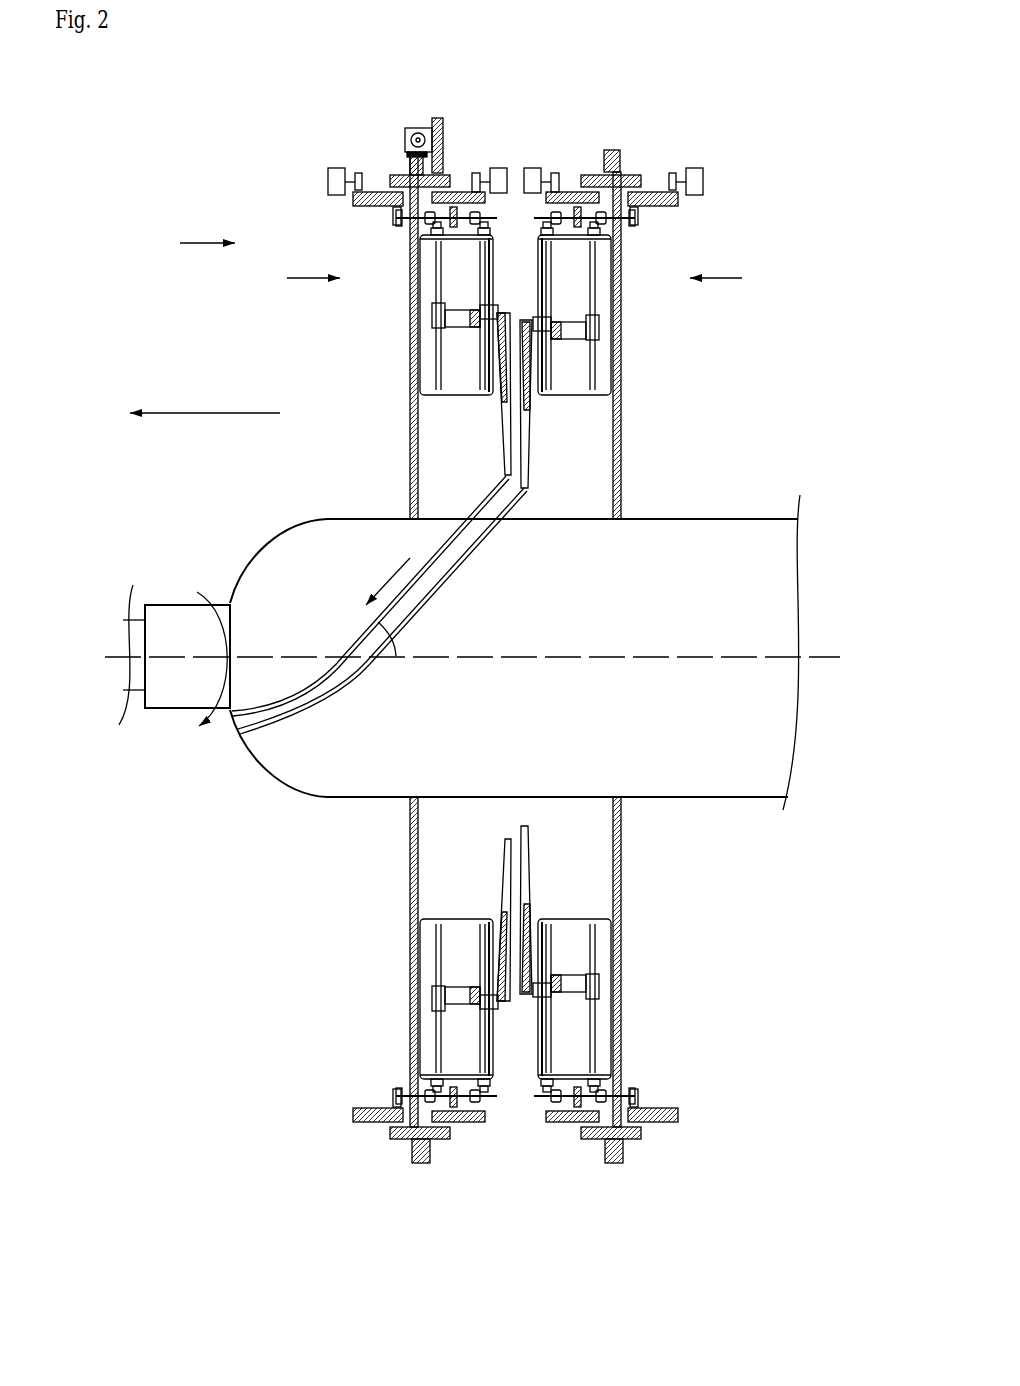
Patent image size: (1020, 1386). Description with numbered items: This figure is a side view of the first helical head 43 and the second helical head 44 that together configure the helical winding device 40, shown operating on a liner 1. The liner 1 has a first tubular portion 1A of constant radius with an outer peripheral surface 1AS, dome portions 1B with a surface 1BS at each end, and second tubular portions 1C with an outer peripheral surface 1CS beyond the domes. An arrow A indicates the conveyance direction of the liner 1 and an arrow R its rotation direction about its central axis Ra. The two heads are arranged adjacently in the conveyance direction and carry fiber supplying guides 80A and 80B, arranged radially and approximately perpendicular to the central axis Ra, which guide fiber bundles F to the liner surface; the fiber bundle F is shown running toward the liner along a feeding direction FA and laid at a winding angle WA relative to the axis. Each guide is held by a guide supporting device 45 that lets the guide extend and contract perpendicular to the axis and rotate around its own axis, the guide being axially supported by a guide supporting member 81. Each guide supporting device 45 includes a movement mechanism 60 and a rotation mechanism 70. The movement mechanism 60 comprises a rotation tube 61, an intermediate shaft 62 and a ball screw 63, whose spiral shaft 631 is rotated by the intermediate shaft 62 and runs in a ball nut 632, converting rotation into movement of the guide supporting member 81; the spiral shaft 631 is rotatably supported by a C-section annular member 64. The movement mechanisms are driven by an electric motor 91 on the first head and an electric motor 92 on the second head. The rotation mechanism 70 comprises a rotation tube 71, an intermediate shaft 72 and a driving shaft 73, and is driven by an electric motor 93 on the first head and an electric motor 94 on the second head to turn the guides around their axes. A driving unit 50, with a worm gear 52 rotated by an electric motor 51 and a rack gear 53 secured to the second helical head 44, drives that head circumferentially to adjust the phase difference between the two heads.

The liner 1 is at (761, 483).
The first tubular portion 1A is at (683, 523).
The outer peripheral surface of the first tubular portion 1AS is at (718, 519).
The dome portion 1B is at (278, 560).
The surface of shoulder portion 1BS is at (295, 522).
The second tubular portion 1C is at (152, 617).
The outer peripheral surface of the second tubular portion 1CS is at (181, 605).
The helical winding device 40 is at (194, 243).
The first helical head 43 is at (729, 278).
The second helical head 44 is at (300, 278).
The guide supporting device 45 is at (395, 321).
The driving unit 50 is at (405, 103).
The electric motor 51 is at (405, 138).
The worm gear 52 is at (414, 123).
The rack gear 53 is at (407, 154).
The movement mechanism 60 is at (350, 134).
The rotation tube 61 is at (368, 206).
The intermediate shaft 62 is at (397, 223).
The ball screw 63 is at (452, 335).
The spiral shaft 631 is at (441, 252).
The ball nut 632 is at (460, 296).
The annular member 64 is at (428, 352).
The rotation mechanism 70 is at (472, 136).
The rotation tube 71 is at (459, 191).
The intermediate shaft 72 is at (548, 208).
The driving shaft 73 is at (546, 275).
The fiber supplying guide 80A is at (525, 457).
The fiber supplying guide 80B is at (504, 457).
The guide supporting member 81 is at (499, 416).
The electric motor 91 is at (697, 170).
The electric motor 92 is at (333, 170).
The electric motor 93 is at (533, 168).
The electric motor 94 is at (497, 168).
The arrow indicating conveyance direction A is at (205, 398).
The fiber bundle F is at (468, 548).
The filament feeding direction FA is at (385, 579).
The winding angle WA is at (401, 639).
The arrow indicating rotation direction R is at (212, 680).
The central axis Ra is at (820, 655).